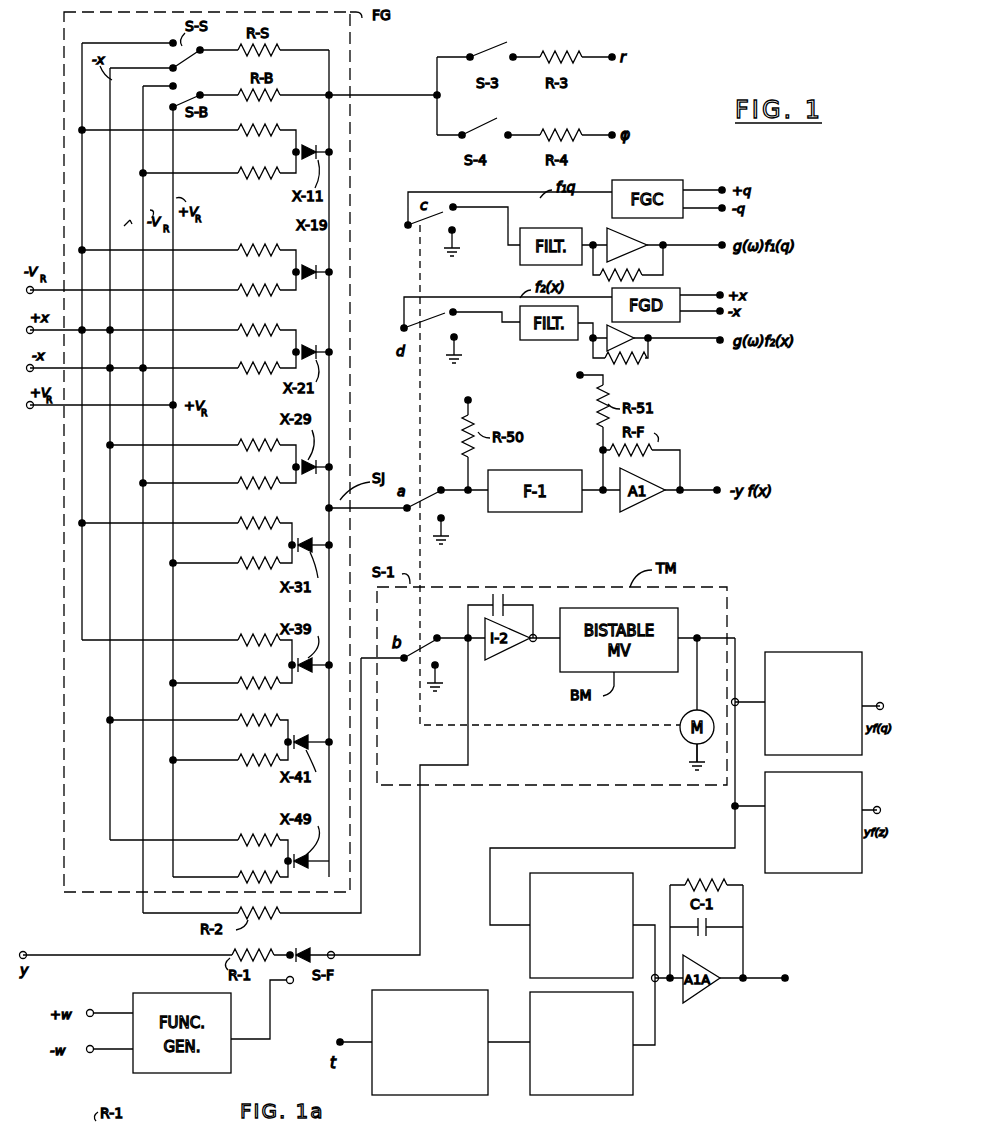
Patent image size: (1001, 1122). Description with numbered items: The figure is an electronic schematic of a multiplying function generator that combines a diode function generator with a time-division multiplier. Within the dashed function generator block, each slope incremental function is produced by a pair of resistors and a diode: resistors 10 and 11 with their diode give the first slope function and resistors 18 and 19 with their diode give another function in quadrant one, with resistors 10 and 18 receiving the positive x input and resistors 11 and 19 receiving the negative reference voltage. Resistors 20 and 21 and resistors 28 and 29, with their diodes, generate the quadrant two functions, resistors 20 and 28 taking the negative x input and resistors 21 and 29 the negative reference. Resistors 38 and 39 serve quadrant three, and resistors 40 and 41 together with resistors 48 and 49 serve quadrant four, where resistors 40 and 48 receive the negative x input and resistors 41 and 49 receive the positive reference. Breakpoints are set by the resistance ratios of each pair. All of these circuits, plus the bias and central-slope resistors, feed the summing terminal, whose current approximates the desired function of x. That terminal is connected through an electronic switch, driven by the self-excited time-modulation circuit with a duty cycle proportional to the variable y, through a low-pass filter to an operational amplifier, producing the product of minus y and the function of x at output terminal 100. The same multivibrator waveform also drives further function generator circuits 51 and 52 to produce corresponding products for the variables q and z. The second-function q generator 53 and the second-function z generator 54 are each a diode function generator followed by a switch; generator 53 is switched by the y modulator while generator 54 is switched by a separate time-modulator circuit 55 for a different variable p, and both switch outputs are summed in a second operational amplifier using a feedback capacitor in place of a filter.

The resistor 10 is at (272, 128).
The resistor 11 is at (272, 170).
The resistor 18 is at (262, 246).
The resistor 19 is at (258, 287).
The resistor 20 is at (246, 326).
The resistor 21 is at (246, 364).
The resistor 28 is at (246, 440).
The resistor 29 is at (246, 480).
The resistor 38 is at (242, 634).
The resistor 39 is at (242, 678).
The resistor 40 is at (242, 716).
The resistor 41 is at (242, 757).
The resistor 48 is at (242, 836).
The resistor 49 is at (242, 874).
The function generator circuit 51 is at (775, 652).
The function generator circuit 52 is at (798, 873).
The f2(q) generator 53 is at (562, 873).
The f2(z) function generator 54 is at (580, 1095).
The time-modulator circuit 55 is at (415, 1095).
The output terminal 100 is at (716, 496).